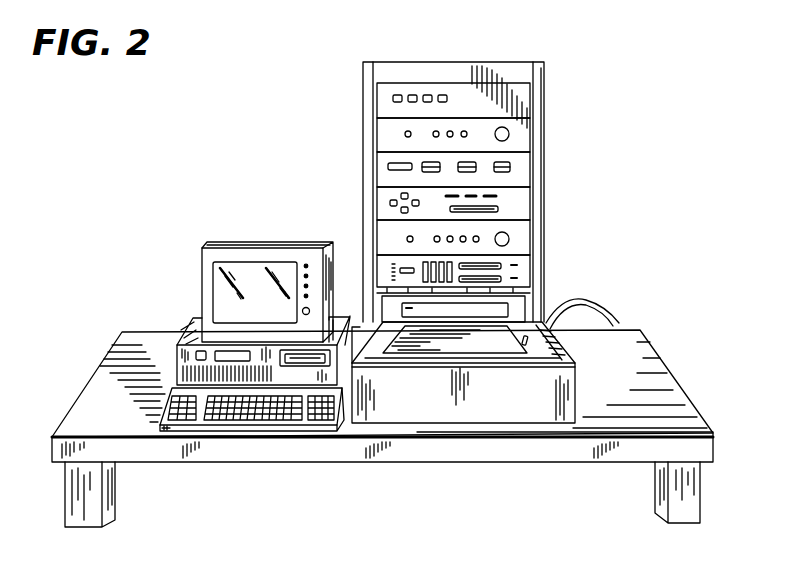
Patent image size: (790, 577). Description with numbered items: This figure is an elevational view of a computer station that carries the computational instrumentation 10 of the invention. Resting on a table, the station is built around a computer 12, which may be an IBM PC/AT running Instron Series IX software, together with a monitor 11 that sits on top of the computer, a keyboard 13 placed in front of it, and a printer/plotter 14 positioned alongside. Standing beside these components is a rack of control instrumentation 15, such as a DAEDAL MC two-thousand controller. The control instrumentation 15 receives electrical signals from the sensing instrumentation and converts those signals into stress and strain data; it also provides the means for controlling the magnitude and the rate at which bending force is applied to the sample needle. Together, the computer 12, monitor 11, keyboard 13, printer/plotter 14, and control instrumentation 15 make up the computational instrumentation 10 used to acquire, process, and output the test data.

The computational instrumentation 10 is at (158, 216).
The monitor 11 is at (278, 221).
The computer 12 is at (192, 326).
The keyboard 13 is at (272, 432).
The printer/plotter 14 is at (485, 410).
The control instrumentation 15 is at (545, 157).